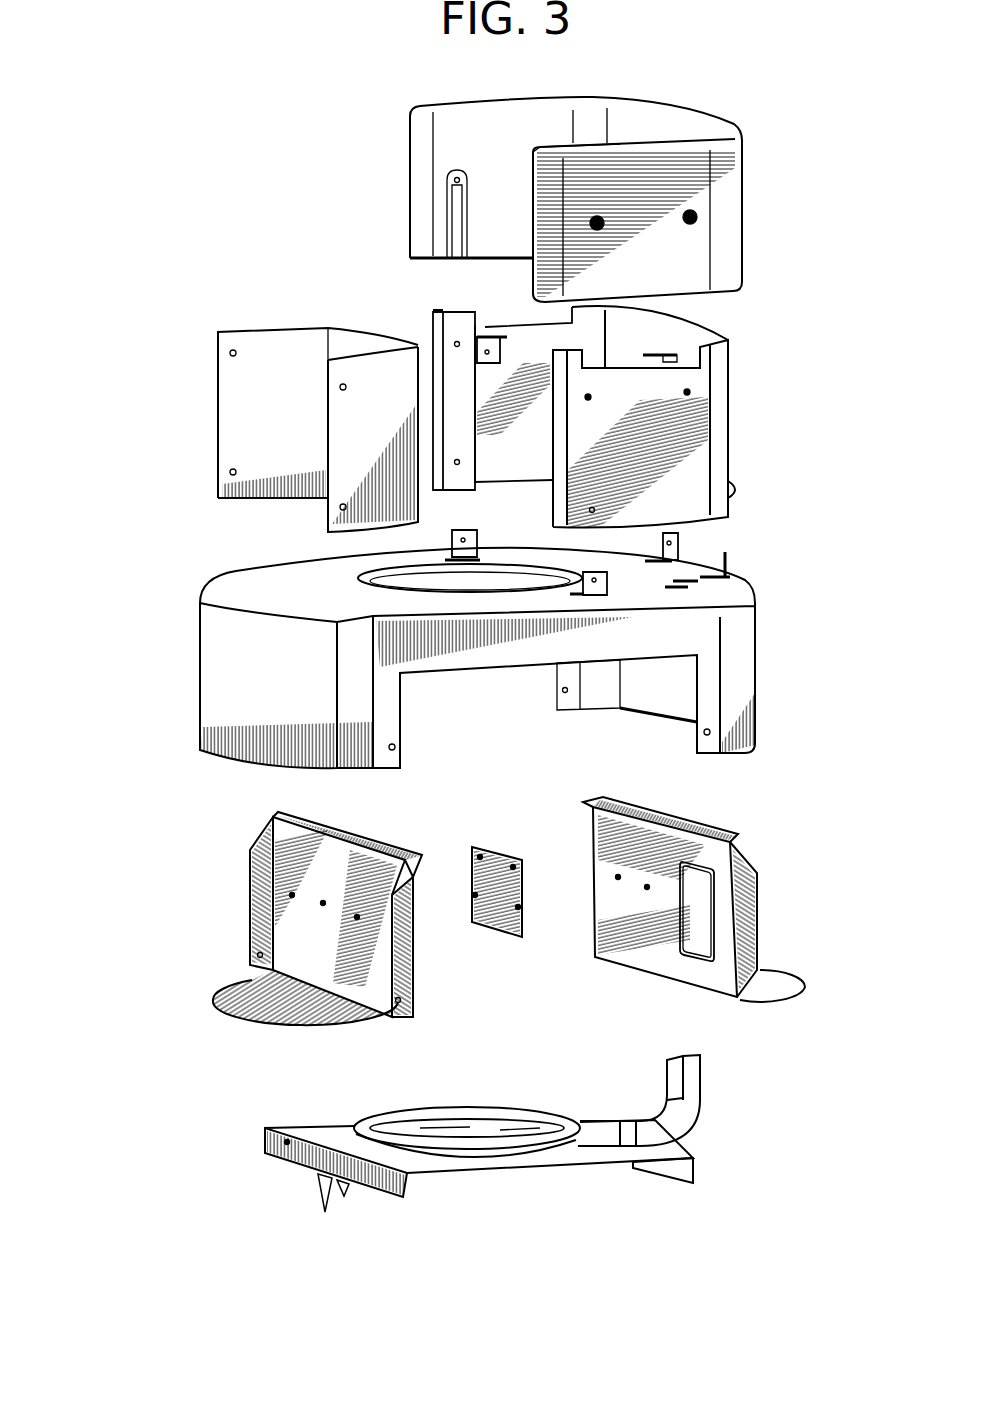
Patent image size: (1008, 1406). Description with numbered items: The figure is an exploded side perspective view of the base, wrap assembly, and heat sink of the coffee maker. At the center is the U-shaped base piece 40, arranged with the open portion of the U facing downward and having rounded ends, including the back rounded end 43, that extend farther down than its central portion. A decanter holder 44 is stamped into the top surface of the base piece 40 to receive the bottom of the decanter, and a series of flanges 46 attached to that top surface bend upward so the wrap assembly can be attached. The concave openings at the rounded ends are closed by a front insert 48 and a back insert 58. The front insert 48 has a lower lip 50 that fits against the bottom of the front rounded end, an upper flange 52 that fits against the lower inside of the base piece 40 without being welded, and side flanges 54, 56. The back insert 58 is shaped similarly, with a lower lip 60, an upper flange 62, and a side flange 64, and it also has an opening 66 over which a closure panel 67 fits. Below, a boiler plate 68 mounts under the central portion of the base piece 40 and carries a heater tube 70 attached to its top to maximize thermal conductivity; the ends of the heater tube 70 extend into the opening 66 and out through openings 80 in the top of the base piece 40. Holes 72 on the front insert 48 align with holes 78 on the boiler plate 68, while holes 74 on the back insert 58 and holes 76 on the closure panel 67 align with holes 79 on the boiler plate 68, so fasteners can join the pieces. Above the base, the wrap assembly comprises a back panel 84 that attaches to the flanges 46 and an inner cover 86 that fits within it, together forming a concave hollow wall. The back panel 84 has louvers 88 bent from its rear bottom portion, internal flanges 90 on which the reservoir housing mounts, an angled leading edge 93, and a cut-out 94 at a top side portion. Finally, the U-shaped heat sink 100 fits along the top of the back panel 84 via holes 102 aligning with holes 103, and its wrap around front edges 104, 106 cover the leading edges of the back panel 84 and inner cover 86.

The U-shaped base piece 40 is at (676, 650).
The back rounded end 43 is at (740, 752).
The decanter holder 44 is at (457, 582).
The flanges 46 is at (478, 543).
The front insert 48 is at (408, 870).
The lower lip 50 is at (297, 998).
The upper flange 52 is at (340, 823).
The side flange 54 is at (262, 852).
The side flange 56 is at (413, 925).
The back insert 58 is at (568, 836).
The lower lip 60 is at (777, 983).
The upper flange 62 is at (660, 815).
The side flange 64 is at (745, 872).
The opening 66 is at (695, 958).
The closure panel 67 is at (518, 908).
The boiler plate 68 is at (670, 1148).
The heater tube 70 is at (560, 1120).
The holes 72 is at (357, 917).
The holes 74 is at (647, 890).
The holes 76 is at (513, 867).
The holes 78 is at (343, 1192).
The holes 79 is at (667, 1170).
The openings 80 is at (752, 594).
The back panel 84 is at (730, 400).
The inner cover 86 is at (237, 409).
The louvers 88 is at (738, 482).
The internal flanges 90 is at (490, 337).
The angled leading edge 93 is at (557, 452).
The cut-out 94 is at (528, 323).
The heat sink 100 is at (712, 172).
The holes 102 is at (712, 253).
The holes 103 is at (588, 395).
The wrap around front edge 104 is at (412, 130).
The wrap around front edge 106 is at (545, 178).